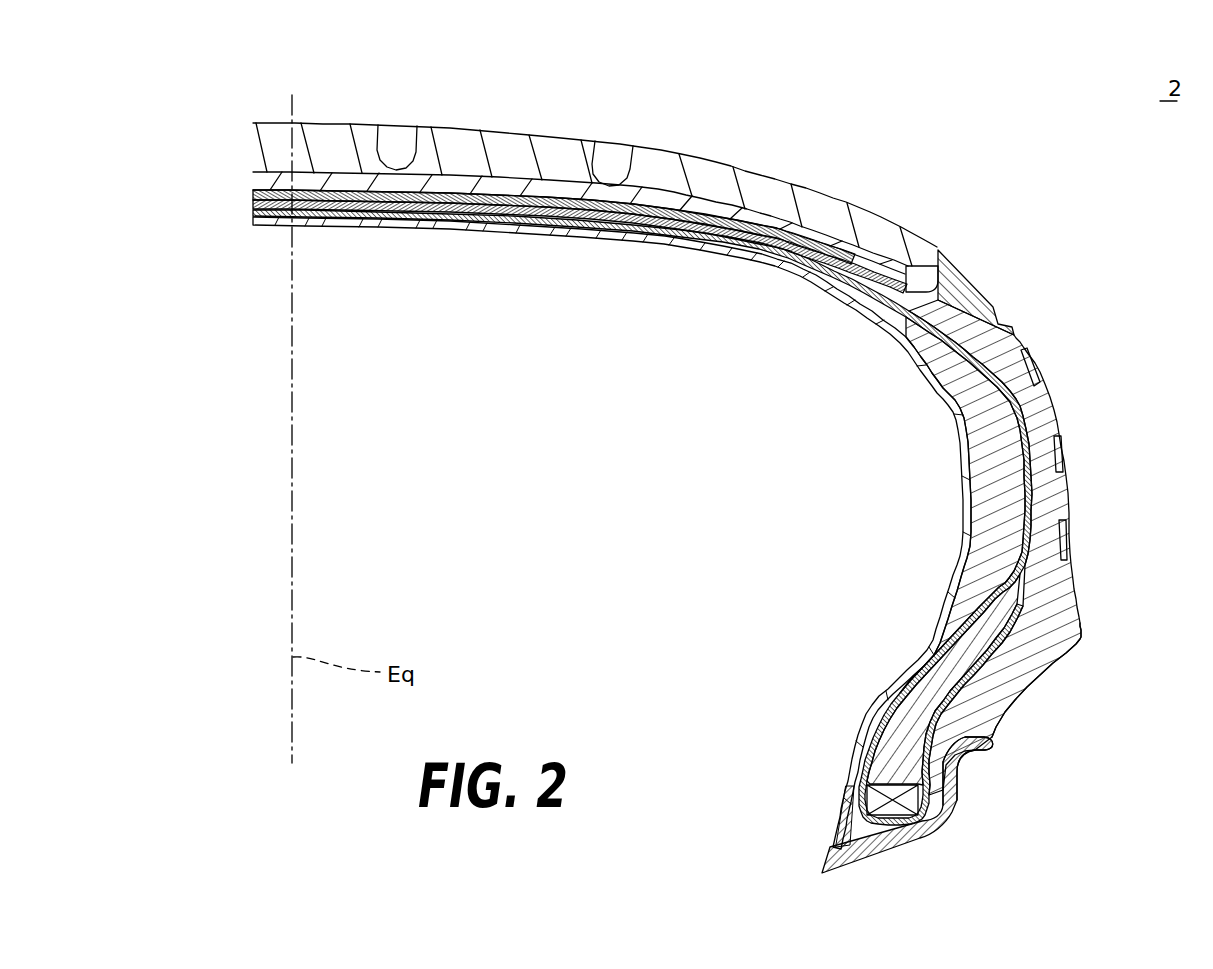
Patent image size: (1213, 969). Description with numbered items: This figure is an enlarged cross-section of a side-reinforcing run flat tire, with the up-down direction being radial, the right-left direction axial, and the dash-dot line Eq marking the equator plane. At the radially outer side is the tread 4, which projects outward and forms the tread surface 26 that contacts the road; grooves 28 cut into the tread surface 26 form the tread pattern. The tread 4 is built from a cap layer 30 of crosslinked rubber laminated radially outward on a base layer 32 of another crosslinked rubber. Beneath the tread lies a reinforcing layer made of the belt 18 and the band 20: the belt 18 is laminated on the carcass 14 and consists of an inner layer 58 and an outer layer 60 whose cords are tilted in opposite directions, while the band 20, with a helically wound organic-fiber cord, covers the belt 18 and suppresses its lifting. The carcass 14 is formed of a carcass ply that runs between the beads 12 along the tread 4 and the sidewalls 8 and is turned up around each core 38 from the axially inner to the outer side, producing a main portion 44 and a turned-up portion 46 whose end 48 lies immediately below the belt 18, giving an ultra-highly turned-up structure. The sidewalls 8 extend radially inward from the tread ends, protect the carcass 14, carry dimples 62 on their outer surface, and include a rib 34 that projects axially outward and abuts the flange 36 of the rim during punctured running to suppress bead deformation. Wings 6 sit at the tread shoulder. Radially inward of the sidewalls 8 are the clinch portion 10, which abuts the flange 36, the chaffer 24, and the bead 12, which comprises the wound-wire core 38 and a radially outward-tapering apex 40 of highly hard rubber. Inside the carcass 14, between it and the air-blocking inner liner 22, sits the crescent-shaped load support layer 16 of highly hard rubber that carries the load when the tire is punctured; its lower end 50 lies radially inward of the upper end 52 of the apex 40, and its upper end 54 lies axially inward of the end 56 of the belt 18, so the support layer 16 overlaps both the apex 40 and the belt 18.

The tread 4 is at (752, 165).
The tread surface 26 is at (653, 142).
The cap layer 30 is at (478, 157).
The base layer 32 is at (553, 190).
The grooves 28 is at (384, 150).
The band 20 is at (343, 192).
The belt 18 is at (169, 176).
The outer layer 60 is at (253, 197).
The inner layer 58 is at (253, 210).
The carcass 14 is at (1007, 373).
The inner liner 22 is at (433, 226).
The load support layer 16 is at (965, 545).
The main portion 44 is at (985, 450).
The turned-up portion 46 is at (1040, 420).
The sidewall 8 is at (1072, 490).
The clinch portion 10 is at (970, 705).
The wing 6 is at (965, 290).
The end of the belt 56 is at (915, 268).
The dimples 62 is at (1037, 365).
The upper end of the apex 52 is at (1069, 540).
The rib 34 is at (1082, 636).
The lower end of the support layer 50 is at (878, 712).
The bead 12 is at (744, 745).
The apex 40 is at (900, 750).
The core 38 is at (877, 797).
The chaffer 24 is at (953, 777).
The flange of the rim 36 is at (952, 810).
The end of the turned-up portion 48 is at (717, 253).
The upper end of the support layer 54 is at (800, 277).